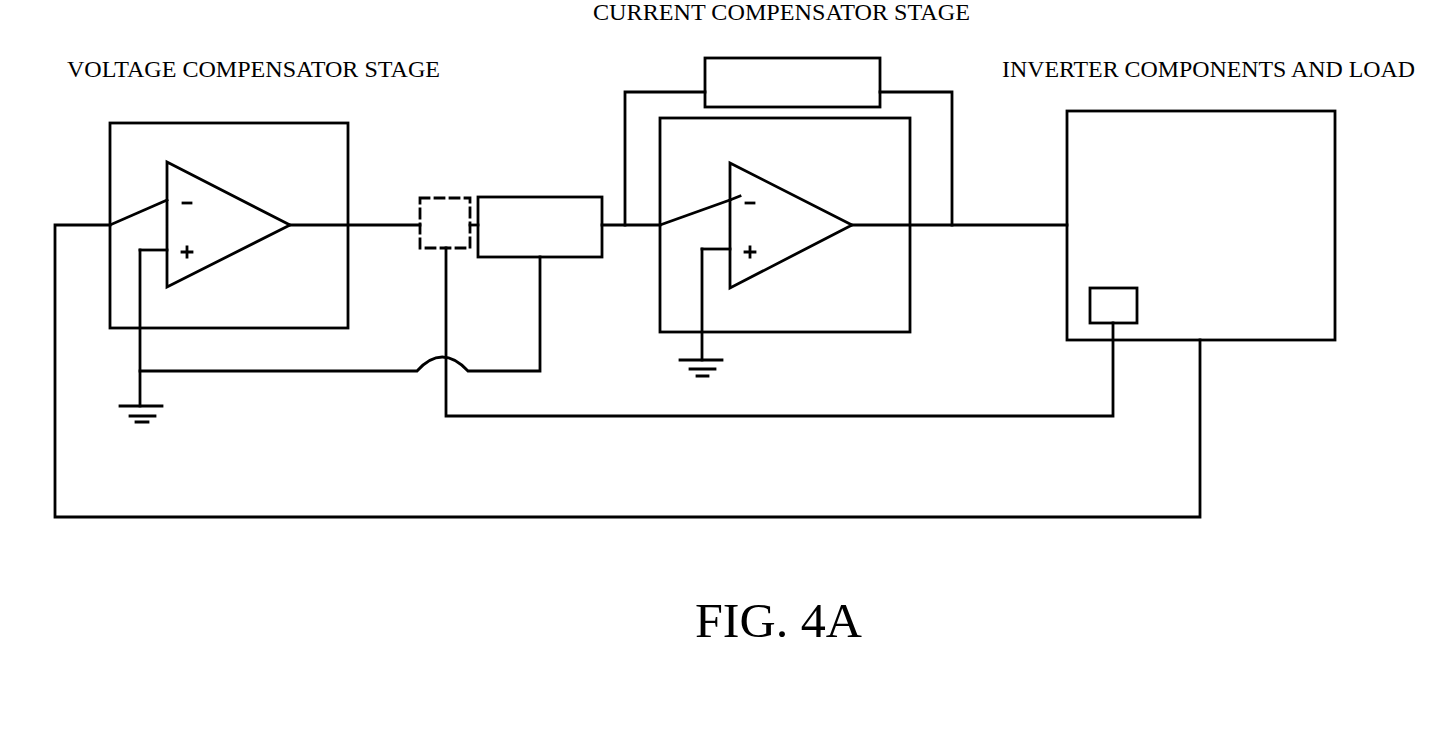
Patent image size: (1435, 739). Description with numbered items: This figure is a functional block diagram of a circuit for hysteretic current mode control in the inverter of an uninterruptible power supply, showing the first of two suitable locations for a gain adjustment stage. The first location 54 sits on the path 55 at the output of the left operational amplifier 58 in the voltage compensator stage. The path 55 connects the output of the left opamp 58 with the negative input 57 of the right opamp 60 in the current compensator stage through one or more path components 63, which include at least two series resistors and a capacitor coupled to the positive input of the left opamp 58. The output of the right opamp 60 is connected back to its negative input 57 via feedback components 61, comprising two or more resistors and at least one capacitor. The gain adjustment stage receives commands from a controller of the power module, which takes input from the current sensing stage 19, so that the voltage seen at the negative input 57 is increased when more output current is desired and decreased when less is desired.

The current sensing stage 19 is at (1113, 305).
The first location 54 is at (446, 192).
The path 55 is at (373, 220).
The negative input 57 is at (735, 197).
The left operational amplifier 58 is at (200, 224).
The right operational amplifier 60 is at (756, 225).
The feedback components 61 is at (788, 141).
The path components 63 is at (540, 227).